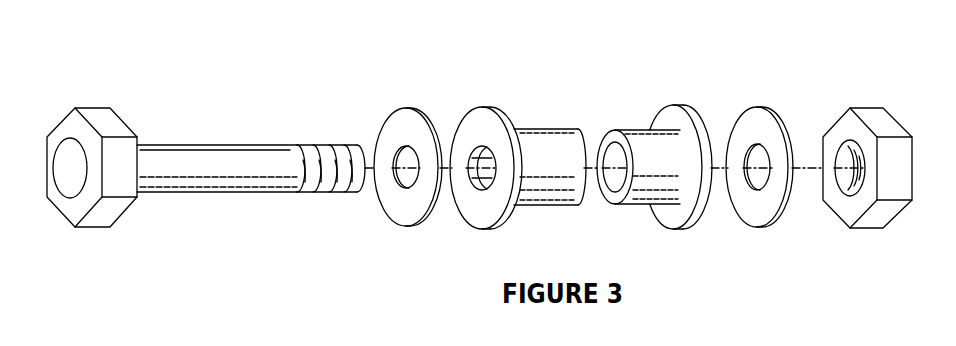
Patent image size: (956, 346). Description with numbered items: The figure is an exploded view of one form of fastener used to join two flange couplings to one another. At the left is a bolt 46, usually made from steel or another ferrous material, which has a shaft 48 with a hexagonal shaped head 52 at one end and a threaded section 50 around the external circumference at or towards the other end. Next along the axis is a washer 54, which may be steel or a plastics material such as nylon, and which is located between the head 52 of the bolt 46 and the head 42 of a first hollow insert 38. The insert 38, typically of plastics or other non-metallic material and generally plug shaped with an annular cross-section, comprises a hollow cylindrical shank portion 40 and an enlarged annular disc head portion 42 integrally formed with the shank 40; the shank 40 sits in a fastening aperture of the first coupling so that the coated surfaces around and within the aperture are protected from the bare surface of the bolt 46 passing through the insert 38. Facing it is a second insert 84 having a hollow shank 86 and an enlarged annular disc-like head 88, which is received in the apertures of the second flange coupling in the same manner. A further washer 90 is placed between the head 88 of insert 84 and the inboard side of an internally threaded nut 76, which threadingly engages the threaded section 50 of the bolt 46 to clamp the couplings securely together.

The first hollow insert 38 is at (493, 152).
The shank portion 40 is at (532, 203).
The head portion 42 is at (473, 213).
The bolt 46 is at (206, 188).
The shaft 48 is at (210, 160).
The threaded section 50 is at (327, 155).
The hexagonal shaped head 52 is at (108, 213).
The washer 54 is at (405, 112).
The nut 76 is at (867, 117).
The second insert 84 is at (670, 136).
The hollow shank 86 is at (630, 203).
The enlarged annular disc-like head 88 is at (700, 208).
The washer 90 is at (762, 110).